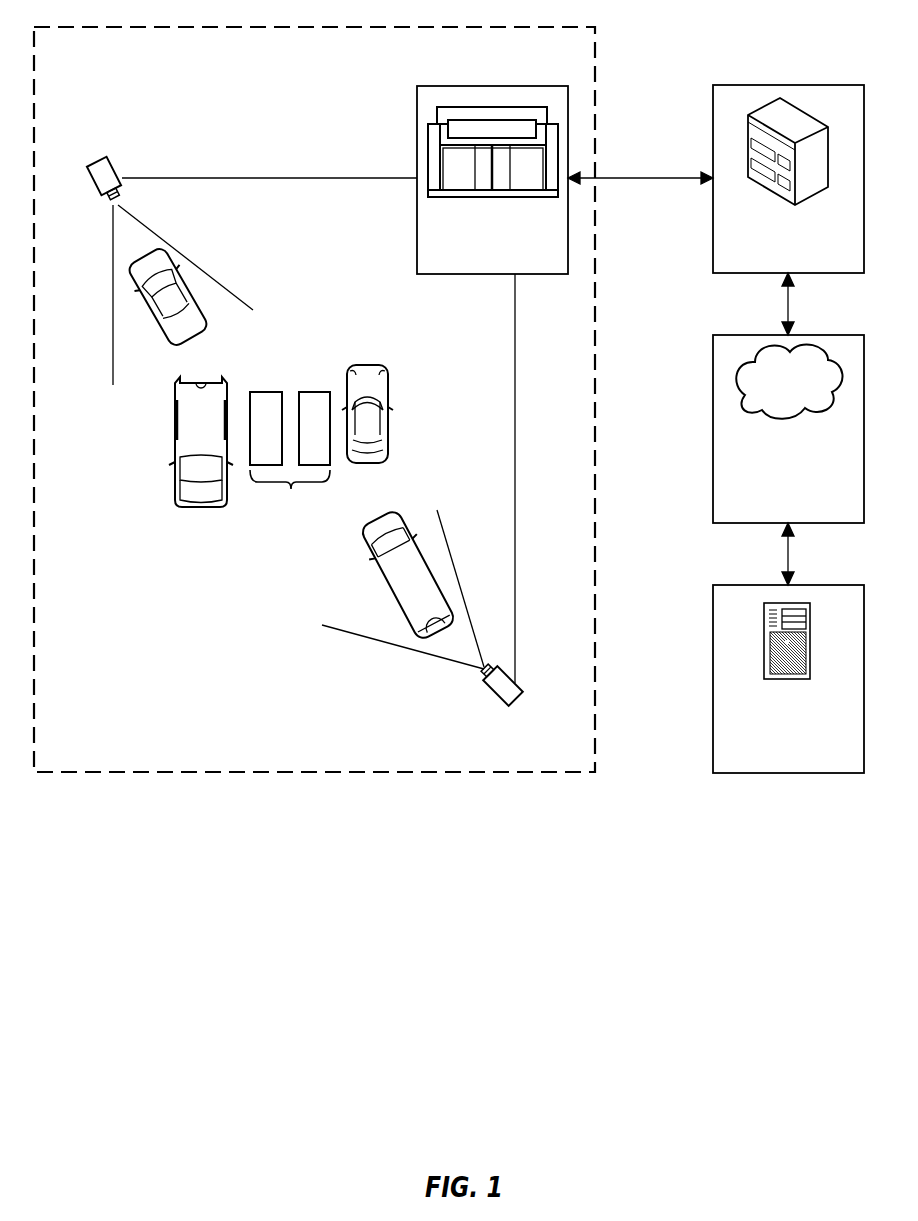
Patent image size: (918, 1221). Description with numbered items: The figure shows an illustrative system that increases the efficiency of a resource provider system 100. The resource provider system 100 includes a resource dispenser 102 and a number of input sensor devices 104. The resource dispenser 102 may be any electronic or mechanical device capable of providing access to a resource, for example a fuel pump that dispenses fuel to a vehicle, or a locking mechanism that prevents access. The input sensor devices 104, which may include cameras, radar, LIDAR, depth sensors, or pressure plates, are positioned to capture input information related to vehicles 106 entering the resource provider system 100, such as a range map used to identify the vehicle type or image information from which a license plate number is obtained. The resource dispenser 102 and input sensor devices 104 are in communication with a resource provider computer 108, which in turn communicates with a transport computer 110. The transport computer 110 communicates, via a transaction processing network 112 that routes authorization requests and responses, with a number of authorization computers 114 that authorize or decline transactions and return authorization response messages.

The resource provider system 100 is at (314, 399).
The resource dispenser 102 is at (290, 458).
The input sensor devices 104 is at (105, 158).
The vehicles 106 is at (378, 571).
The resource provider computer 108 is at (492, 180).
The transport computer 110 is at (788, 179).
The transaction processing network 112 is at (788, 429).
The authorization computer 114 is at (788, 679).